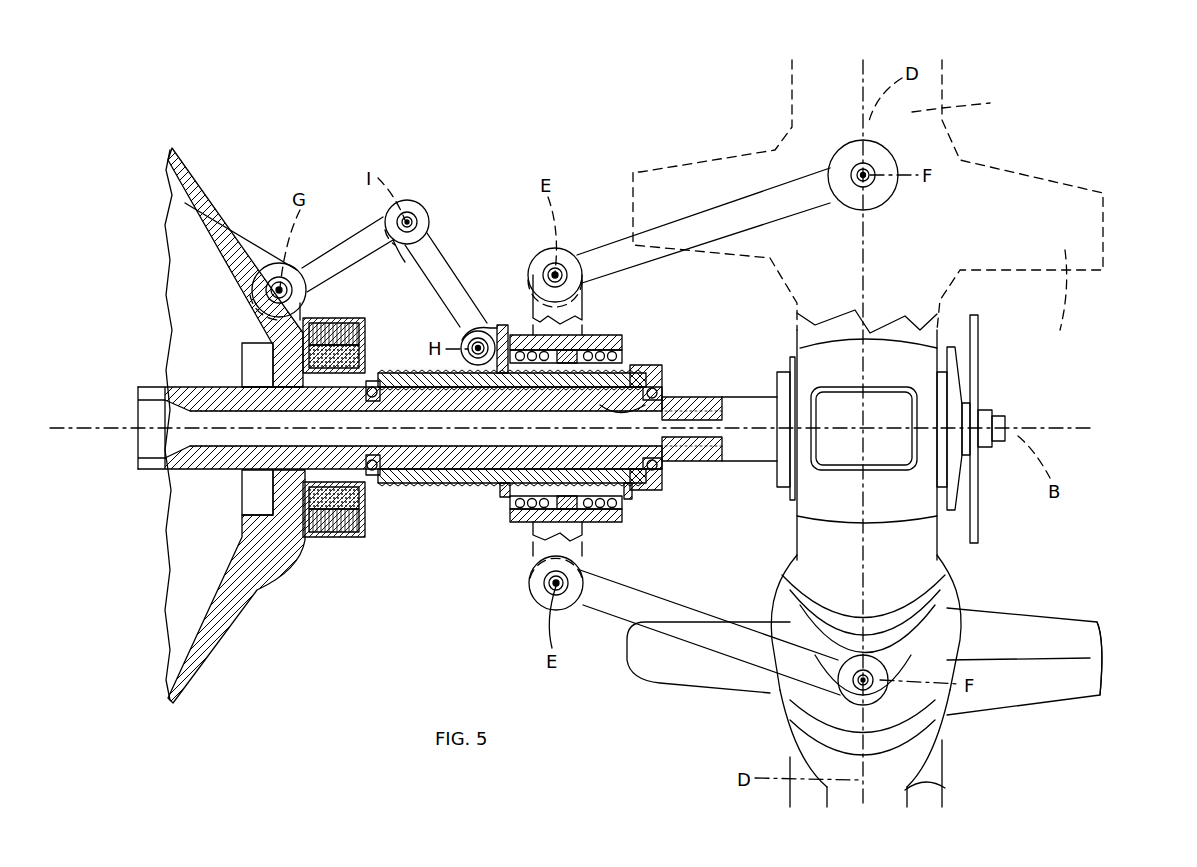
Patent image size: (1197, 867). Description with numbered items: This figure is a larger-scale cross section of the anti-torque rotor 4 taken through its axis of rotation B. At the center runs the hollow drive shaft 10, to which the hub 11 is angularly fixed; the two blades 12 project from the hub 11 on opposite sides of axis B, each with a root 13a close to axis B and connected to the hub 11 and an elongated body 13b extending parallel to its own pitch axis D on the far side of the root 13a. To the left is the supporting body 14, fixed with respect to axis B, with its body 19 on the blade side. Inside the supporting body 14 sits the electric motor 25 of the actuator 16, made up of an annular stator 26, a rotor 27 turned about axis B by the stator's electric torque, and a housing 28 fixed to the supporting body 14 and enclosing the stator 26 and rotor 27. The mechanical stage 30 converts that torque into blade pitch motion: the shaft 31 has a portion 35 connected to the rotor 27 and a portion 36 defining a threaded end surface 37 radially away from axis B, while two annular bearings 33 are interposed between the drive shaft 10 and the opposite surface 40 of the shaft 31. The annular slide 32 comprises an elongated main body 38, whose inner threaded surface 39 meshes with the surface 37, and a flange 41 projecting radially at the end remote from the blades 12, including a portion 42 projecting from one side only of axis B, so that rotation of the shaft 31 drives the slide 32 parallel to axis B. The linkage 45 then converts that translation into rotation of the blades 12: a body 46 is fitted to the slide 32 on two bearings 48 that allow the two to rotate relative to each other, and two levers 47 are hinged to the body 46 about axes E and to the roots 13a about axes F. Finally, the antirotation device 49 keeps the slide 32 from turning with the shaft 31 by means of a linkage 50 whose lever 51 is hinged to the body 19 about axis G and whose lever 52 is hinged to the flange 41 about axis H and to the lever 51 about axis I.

The anti-torque rotor 4 is at (1100, 697).
The drive shaft 10 is at (760, 455).
The hub 11 is at (905, 360).
The blade 12 is at (1020, 206).
The root 13a is at (1050, 636).
The elongated body 13b is at (958, 106).
The supporting body 14 is at (208, 170).
The actuator 16 is at (457, 488).
The body 19 is at (187, 203).
The electric motor 25 is at (340, 316).
The stator 26 is at (340, 525).
The rotor 27 is at (360, 493).
The housing 28 is at (300, 548).
The mechanical stage 30 is at (481, 258).
The shaft 31 is at (650, 376).
The slide 32 is at (566, 362).
The annular bearing 33 is at (376, 385).
The portion 35 is at (300, 380).
The portion 36 is at (400, 375).
The threaded end surface 37 is at (479, 490).
The main body 38 is at (602, 522).
The threaded surface 39 is at (640, 472).
The surface 40 is at (622, 406).
The flange 41 is at (504, 498).
The portion 42 is at (501, 325).
The linkage 45 is at (668, 208).
The body 46 is at (585, 525).
The lever 47 is at (720, 238).
The bearing 48 is at (526, 350).
The antirotation device 49 is at (402, 148).
The linkage 50 is at (425, 202).
The lever 51 is at (340, 250).
The lever 52 is at (428, 283).